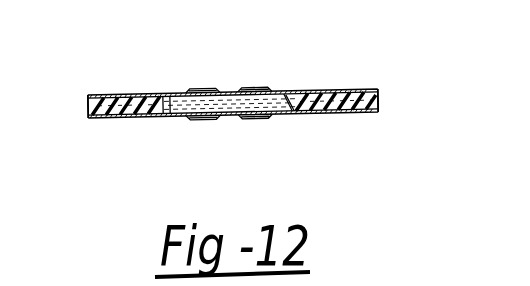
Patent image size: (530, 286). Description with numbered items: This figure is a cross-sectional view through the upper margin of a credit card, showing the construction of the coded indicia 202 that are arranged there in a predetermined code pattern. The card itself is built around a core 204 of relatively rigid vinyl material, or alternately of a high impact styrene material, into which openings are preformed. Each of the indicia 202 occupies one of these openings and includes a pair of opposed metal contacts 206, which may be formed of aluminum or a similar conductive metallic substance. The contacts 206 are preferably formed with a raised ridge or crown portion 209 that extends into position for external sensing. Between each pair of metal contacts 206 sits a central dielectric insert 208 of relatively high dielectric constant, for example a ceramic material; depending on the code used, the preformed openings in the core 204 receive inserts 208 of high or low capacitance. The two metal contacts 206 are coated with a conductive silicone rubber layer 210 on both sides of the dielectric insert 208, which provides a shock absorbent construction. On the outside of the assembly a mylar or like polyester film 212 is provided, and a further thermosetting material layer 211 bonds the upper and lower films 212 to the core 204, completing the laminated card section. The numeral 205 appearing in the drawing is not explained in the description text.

The indicia 202 is at (293, 82).
The core 204 is at (137, 77).
The raised portion 205 is at (170, 91).
The metal contacts 206 is at (201, 91).
The central dielectric insert 208 is at (140, 117).
The raised ridge or crown portion 209 is at (253, 120).
The conductive silicone rubber layer 210 is at (285, 118).
The thermosetting material layer 211 is at (88, 110).
The polyester film 212 is at (350, 63).